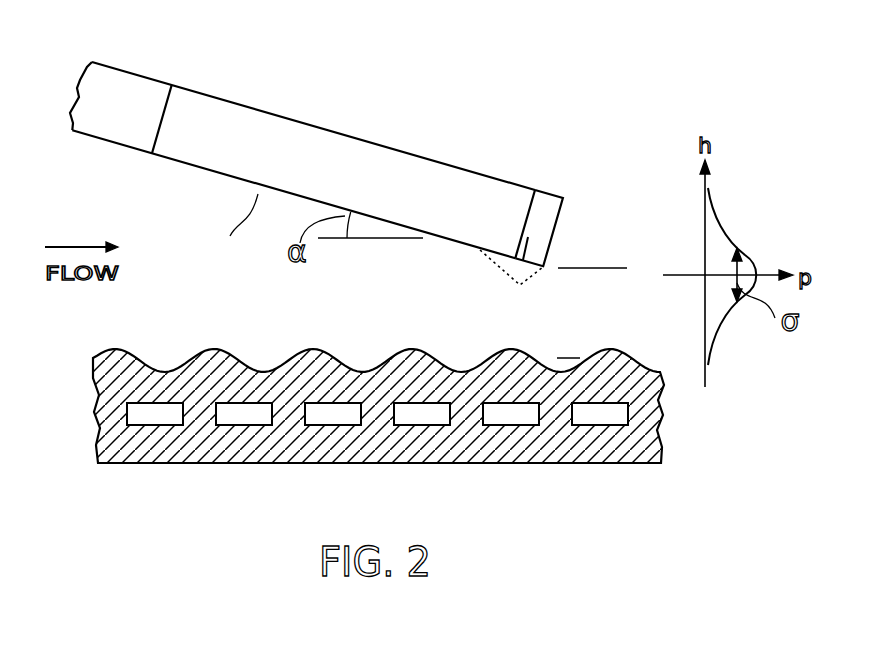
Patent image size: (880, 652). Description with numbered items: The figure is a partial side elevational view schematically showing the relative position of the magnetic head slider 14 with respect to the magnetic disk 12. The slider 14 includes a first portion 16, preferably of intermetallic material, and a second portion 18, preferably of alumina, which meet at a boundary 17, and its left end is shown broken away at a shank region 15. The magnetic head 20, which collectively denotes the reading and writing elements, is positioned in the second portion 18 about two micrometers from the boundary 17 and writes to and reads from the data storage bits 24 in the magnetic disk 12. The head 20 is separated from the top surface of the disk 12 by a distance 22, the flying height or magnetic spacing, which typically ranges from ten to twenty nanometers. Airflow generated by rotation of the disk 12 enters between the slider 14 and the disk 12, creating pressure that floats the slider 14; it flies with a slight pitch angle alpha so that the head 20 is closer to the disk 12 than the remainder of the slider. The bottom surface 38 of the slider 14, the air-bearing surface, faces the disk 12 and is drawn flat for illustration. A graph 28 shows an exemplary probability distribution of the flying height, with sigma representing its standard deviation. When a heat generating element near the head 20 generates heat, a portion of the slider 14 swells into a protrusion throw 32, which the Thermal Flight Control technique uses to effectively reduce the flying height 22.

The magnetic disk 12 is at (128, 463).
The magnetic head slider 14 is at (173, 60).
The blade shank portion 15 is at (102, 143).
The first portion 16 is at (195, 160).
The boundary 17 is at (535, 190).
The second portion 18 is at (553, 195).
The magnetic head 20 is at (527, 247).
The flying height 22 is at (570, 268).
The data storage bits 24 is at (597, 417).
The graph 28 is at (746, 198).
The protrusion throw 32 is at (503, 277).
The bottom surface 38 is at (240, 226).